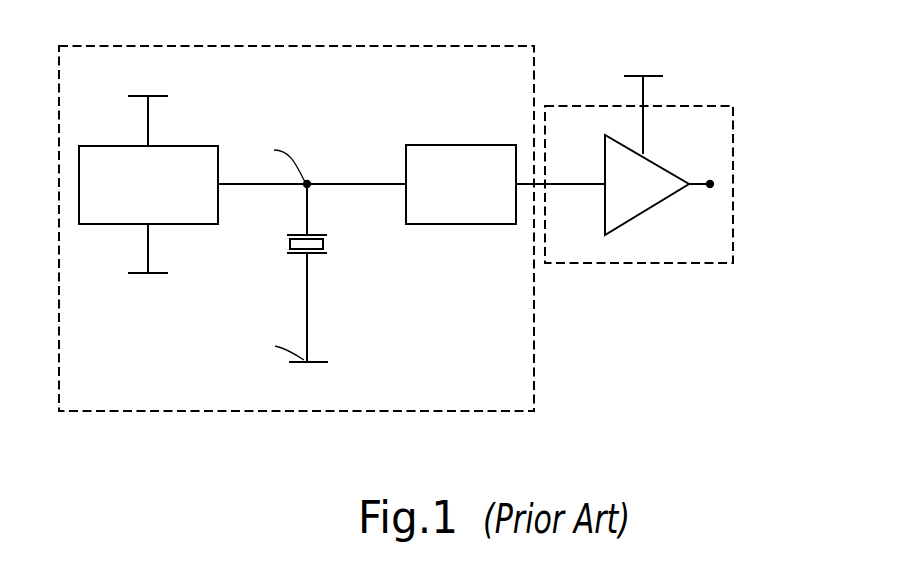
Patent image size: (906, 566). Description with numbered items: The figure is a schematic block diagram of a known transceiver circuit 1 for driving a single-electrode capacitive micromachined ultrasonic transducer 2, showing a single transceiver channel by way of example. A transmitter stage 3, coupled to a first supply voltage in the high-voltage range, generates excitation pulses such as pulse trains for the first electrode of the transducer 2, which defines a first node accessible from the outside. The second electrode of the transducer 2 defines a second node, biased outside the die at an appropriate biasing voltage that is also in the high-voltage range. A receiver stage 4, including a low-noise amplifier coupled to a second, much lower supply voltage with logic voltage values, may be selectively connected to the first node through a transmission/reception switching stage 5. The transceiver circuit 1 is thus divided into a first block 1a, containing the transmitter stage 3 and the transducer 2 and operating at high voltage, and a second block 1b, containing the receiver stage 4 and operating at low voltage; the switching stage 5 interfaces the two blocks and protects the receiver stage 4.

The transceiver circuit 1 is at (712, 80).
The first block 1a is at (540, 372).
The second block 1b is at (696, 271).
The CMUT transducer 2 is at (297, 254).
The transmitter stage 3 is at (188, 213).
The receiver stage 4 is at (625, 218).
The T/R switching stage 5 is at (425, 148).